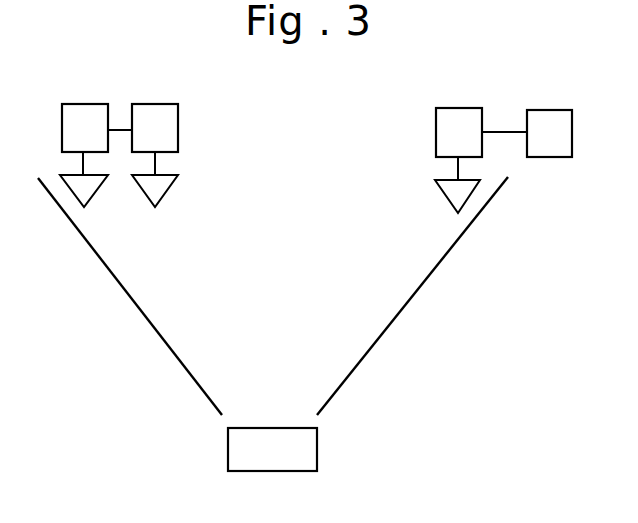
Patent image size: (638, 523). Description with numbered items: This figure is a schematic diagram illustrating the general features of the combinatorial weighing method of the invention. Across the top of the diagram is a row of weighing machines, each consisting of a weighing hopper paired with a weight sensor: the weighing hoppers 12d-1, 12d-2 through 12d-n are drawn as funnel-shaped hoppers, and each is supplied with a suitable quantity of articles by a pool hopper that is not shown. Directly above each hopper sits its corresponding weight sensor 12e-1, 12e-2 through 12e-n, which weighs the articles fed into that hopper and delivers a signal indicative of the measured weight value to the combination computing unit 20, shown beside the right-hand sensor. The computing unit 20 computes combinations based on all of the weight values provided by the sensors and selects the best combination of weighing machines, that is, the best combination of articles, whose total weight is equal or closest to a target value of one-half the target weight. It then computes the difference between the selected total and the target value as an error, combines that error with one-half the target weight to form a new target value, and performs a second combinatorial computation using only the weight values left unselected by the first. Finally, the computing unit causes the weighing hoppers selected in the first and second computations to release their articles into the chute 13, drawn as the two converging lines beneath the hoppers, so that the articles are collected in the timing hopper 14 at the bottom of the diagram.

The weight sensor 12e-1 is at (90, 104).
The weight sensor 12e-2 is at (163, 104).
The weight sensor 12e-n is at (462, 112).
The weighing hopper 12d-1 is at (92, 193).
The weighing hopper 12d-2 is at (163, 192).
The weighing hopper 12d-n is at (445, 193).
The combination computing unit 20 is at (550, 120).
The chute 13 is at (133, 303).
The timing hopper 14 is at (237, 447).